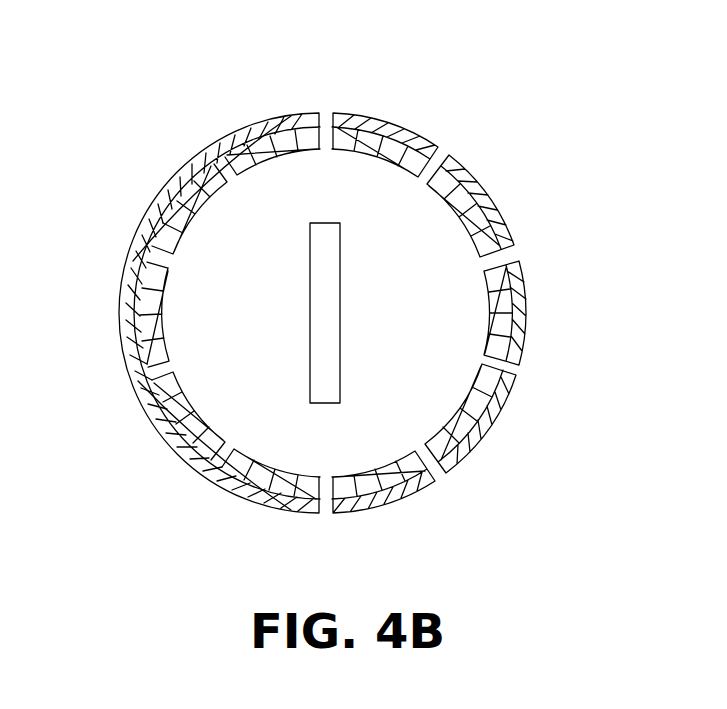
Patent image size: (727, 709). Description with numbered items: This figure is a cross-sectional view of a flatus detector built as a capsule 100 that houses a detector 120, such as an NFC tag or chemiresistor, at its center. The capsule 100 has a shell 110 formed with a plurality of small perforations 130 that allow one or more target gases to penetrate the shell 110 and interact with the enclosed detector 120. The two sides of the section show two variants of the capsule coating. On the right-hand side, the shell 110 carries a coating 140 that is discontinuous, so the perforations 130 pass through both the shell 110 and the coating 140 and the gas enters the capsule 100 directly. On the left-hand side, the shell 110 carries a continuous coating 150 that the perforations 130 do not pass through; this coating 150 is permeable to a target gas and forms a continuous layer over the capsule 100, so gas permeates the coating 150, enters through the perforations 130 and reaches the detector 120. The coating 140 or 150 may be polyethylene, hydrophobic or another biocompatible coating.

The capsule 100 is at (170, 125).
The shell 110 is at (470, 215).
The detector 120 is at (330, 222).
The perforations 130 is at (510, 375).
The coating 140 is at (520, 340).
The continuous coating 150 is at (173, 433).